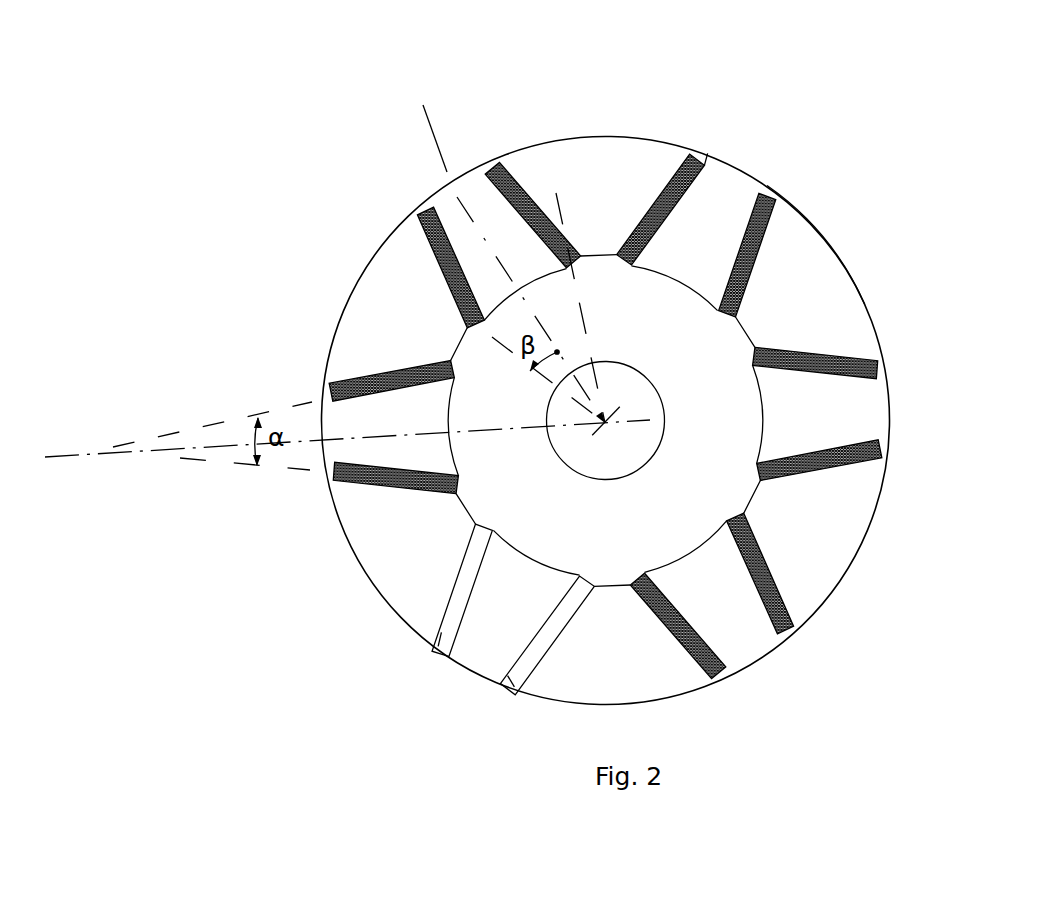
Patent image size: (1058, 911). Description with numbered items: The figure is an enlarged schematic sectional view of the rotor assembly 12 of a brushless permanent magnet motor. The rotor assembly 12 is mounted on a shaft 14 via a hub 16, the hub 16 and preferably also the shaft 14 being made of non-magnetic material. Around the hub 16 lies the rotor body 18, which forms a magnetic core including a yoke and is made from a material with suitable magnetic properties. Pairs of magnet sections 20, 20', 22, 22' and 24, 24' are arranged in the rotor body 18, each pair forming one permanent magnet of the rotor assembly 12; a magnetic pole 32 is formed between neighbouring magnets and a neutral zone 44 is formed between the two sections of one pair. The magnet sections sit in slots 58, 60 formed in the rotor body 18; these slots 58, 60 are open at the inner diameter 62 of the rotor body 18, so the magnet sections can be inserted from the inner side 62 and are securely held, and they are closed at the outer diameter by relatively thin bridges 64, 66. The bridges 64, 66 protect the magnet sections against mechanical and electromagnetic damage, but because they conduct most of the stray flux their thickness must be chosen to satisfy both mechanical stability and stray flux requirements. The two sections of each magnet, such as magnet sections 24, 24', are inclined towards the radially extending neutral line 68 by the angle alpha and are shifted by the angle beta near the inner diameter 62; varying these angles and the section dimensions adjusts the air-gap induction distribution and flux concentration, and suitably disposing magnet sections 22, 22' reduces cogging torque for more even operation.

The rotor assembly 12 is at (652, 103).
The shaft 14 is at (645, 414).
The hub 16 is at (713, 345).
The rotor body 18 is at (803, 260).
The magnet section 20 is at (786, 230).
The magnet section 20' is at (694, 175).
The magnet section 22 is at (532, 174).
The magnet section 22' is at (440, 221).
The magnet section 24 is at (363, 344).
The magnet section 24' is at (377, 523).
The magnetic pole 32 is at (628, 166).
The neutral zone 44 is at (723, 183).
The slot 58 is at (433, 657).
The slot 60 is at (513, 703).
The inner diameter 62 is at (545, 568).
The bridge 64 is at (433, 655).
The bridge 66 is at (500, 698).
The neutral line 68 is at (438, 148).